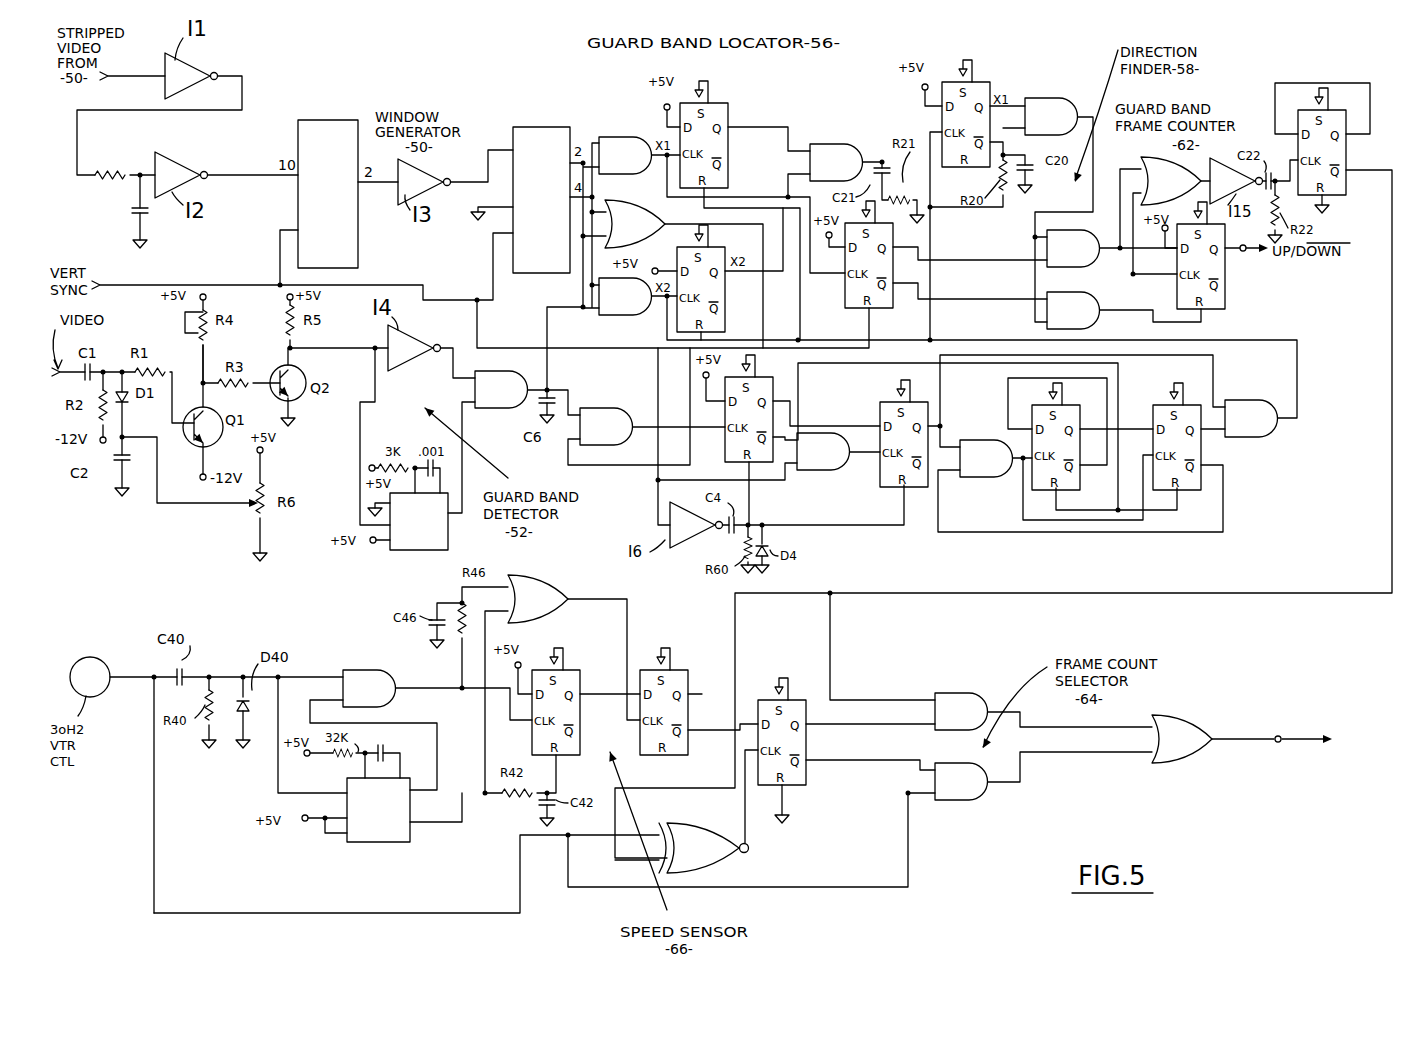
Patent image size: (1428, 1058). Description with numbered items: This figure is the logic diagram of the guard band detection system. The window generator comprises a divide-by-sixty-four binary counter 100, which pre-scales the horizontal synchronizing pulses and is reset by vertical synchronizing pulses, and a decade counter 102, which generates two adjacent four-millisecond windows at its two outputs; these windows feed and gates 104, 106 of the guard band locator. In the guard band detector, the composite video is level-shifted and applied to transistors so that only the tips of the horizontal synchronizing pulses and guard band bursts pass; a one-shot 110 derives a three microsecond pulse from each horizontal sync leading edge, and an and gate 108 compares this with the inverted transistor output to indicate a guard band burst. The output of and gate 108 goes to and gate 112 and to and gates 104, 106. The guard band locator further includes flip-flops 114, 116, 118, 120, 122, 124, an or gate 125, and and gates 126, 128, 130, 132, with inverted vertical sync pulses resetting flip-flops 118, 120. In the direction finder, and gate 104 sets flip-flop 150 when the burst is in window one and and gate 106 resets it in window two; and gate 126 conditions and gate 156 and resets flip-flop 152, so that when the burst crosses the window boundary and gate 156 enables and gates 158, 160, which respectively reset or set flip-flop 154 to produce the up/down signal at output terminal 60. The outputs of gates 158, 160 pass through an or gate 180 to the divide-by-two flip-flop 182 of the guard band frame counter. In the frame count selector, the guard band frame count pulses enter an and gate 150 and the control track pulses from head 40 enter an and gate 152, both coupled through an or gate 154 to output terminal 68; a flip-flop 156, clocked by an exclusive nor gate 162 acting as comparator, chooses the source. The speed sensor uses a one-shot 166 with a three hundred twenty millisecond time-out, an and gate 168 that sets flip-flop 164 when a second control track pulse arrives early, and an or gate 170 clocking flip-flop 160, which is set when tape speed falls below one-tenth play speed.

The control track head 40 is at (90, 657).
The output terminal 60 is at (1240, 262).
The output terminal 68 is at (1300, 716).
The counter 100 is at (318, 125).
The counter 102 is at (535, 127).
The and gate 104 is at (612, 142).
The and gate 106 is at (636, 310).
The and gate 108 is at (487, 398).
The one-shot 110 is at (395, 570).
The and gate 112 is at (592, 410).
The flip-flop 114 is at (718, 108).
The flip-flop 116 is at (730, 318).
The flip-flop 118 is at (766, 408).
The flip-flop 120 is at (880, 476).
The flip-flop 122 is at (1032, 478).
The flip-flop 124 is at (1200, 488).
The or gate 125 is at (645, 212).
The and gate 126 is at (838, 150).
The and gate 128 is at (842, 438).
The and gate 130 is at (993, 424).
The and gate 132 is at (1262, 434).
The flip-flop 150 is at (852, 308).
The flip-flop 152 is at (978, 82).
The flip-flop 154 is at (1225, 298).
The and gate 156 is at (1043, 102).
The and gate 158 is at (1075, 270).
The and gate 160 is at (1090, 320).
The exclusive nor gate 162 is at (703, 878).
The flip-flop 164 is at (570, 676).
The one-shot 166 is at (390, 850).
The and gate 168 is at (378, 650).
The or gate 170 is at (540, 600).
The or gate 180 is at (1147, 162).
The flip-flop 182 is at (1340, 114).